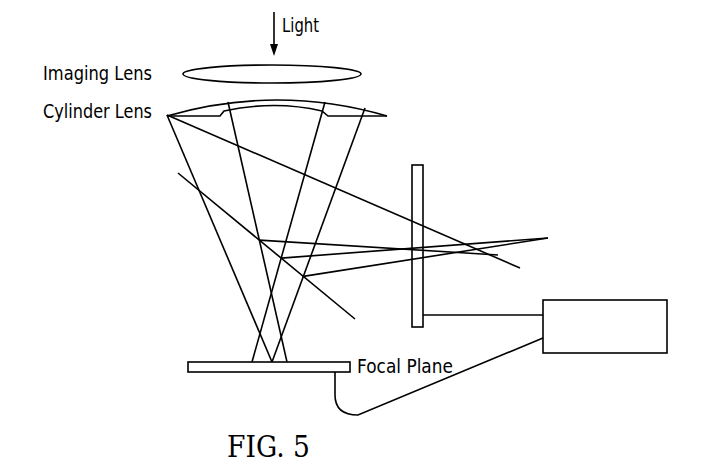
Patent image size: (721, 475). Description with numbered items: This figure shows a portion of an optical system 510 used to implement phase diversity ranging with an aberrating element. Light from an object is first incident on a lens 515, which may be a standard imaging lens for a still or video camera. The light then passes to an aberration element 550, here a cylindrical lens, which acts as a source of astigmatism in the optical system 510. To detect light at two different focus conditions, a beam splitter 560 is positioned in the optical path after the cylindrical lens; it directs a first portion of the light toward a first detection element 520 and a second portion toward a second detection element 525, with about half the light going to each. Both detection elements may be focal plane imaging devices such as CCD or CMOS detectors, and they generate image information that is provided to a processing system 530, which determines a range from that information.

The optical system 510 is at (105, 212).
The lens 515 is at (362, 73).
The aberration element 550 is at (388, 114).
The beam splitter 560 is at (182, 150).
The first detection element 520 is at (424, 208).
The second detection element 525 is at (320, 362).
The processing system 530 is at (650, 300).